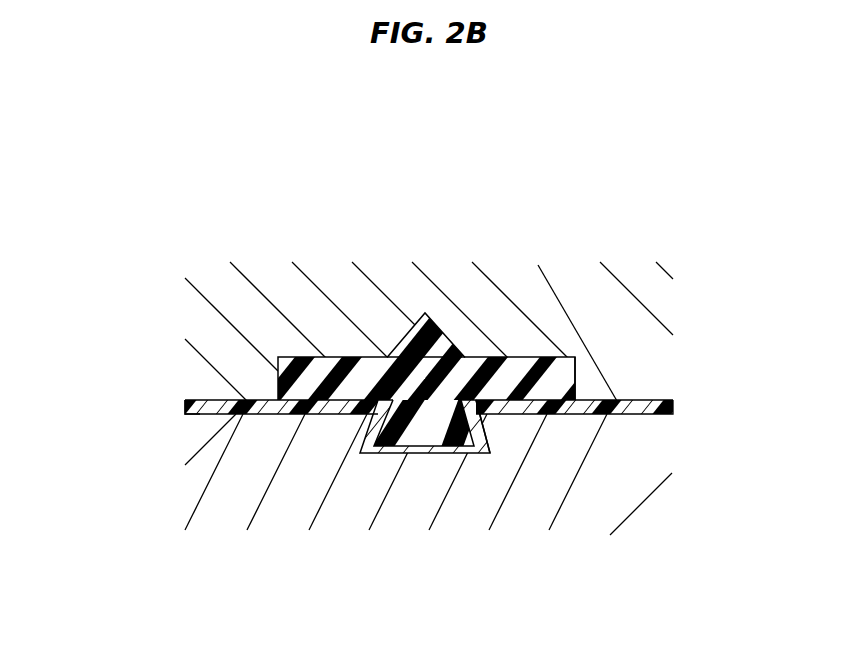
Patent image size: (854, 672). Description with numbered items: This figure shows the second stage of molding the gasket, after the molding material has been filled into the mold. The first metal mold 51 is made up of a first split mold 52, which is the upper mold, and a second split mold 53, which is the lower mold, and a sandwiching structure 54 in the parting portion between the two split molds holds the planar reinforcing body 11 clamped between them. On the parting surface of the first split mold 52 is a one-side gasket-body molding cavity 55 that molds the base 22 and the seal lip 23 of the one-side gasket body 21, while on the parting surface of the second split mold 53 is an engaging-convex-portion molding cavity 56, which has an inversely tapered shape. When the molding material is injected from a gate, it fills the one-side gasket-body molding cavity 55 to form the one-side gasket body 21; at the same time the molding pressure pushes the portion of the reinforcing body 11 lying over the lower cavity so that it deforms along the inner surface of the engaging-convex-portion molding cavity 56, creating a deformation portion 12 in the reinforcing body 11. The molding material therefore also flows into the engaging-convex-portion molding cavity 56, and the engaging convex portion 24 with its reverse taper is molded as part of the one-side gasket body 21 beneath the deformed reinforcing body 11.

The reinforcing body 11 is at (673, 405).
The deformation portion 12 is at (431, 449).
The one-side gasket body 21 is at (522, 372).
The base 22 is at (328, 365).
The seal lip 23 is at (425, 320).
The engaging convex portion 24 is at (408, 427).
The first metal mold 51 is at (363, 361).
The first split mold 52 is at (205, 333).
The second split mold 53 is at (212, 470).
The sandwiching structure 54 is at (194, 406).
The one-side gasket-body molding cavity 55 is at (578, 362).
The engaging-convex-portion molding cavity 56 is at (476, 447).